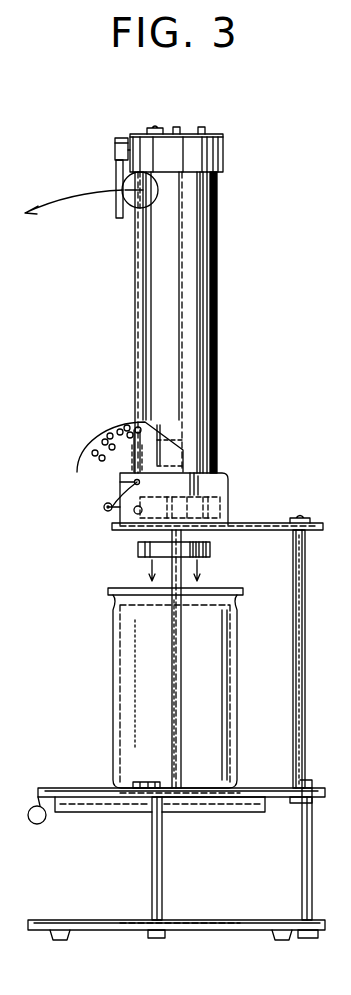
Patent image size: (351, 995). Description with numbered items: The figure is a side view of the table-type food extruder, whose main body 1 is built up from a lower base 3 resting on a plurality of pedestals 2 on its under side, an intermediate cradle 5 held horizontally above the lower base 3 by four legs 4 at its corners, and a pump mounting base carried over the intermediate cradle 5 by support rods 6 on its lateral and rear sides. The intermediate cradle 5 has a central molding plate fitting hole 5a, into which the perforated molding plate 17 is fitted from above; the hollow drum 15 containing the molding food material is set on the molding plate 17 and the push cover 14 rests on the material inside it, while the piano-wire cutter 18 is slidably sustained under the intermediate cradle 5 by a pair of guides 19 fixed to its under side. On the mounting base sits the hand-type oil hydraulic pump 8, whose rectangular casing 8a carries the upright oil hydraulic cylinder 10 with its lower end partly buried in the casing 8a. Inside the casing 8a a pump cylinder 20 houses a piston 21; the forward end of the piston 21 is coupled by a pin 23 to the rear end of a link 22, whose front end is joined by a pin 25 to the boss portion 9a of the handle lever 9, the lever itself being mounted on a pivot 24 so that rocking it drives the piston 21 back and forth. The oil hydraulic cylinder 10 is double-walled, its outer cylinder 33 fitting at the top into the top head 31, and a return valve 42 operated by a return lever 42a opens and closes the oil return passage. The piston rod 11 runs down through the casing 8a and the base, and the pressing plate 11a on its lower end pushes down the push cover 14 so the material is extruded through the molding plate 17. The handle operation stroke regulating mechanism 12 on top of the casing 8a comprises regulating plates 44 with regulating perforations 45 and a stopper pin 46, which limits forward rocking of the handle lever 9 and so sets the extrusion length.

The main body 1 is at (306, 592).
The pedestals 2 is at (60, 941).
The lower base 3 is at (115, 932).
The legs 4 is at (152, 868).
The intermediate cradle 5 is at (58, 788).
The molding plate fitting hole 5a is at (220, 812).
The support rods 6 is at (181, 665).
The hand-type oil hydraulic pump 8 is at (232, 470).
The casing 8a is at (222, 470).
The handle lever 9 is at (135, 318).
The boss portion 9a is at (118, 496).
The oil hydraulic cylinder 10 is at (220, 284).
The piston rod 11 is at (200, 535).
The pressing plate 11a is at (205, 562).
The handle operation stroke regulating mechanism 12 is at (98, 440).
The push cover 14 is at (113, 620).
The hollow drum 15 is at (113, 676).
The molding plate 17 is at (140, 786).
The cutter 18 is at (31, 806).
The guides 19 is at (97, 813).
The pump cylinder 20 is at (222, 500).
The piston 21 is at (232, 530).
The link 22 is at (113, 512).
The pin 23 is at (128, 530).
The pivot 24 is at (135, 483).
The pin 25 is at (104, 509).
The top head 31 is at (223, 147).
The outer cylinder 33 is at (218, 252).
The return valve 42 is at (122, 137).
The return lever 42a is at (115, 168).
The regulating plates 44 is at (172, 448).
The regulating perforations 45 is at (125, 432).
The stopper pin 46 is at (113, 432).